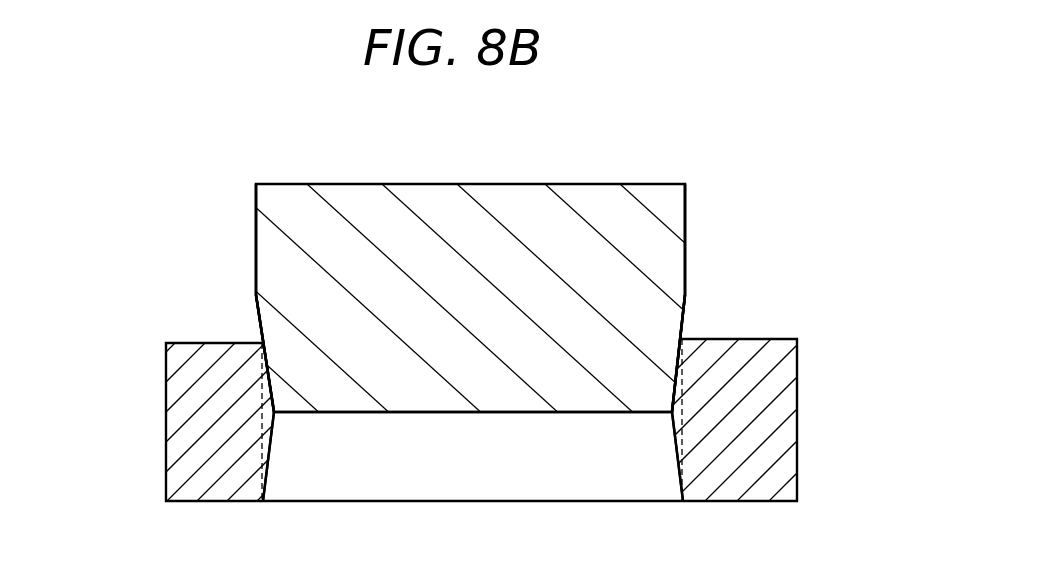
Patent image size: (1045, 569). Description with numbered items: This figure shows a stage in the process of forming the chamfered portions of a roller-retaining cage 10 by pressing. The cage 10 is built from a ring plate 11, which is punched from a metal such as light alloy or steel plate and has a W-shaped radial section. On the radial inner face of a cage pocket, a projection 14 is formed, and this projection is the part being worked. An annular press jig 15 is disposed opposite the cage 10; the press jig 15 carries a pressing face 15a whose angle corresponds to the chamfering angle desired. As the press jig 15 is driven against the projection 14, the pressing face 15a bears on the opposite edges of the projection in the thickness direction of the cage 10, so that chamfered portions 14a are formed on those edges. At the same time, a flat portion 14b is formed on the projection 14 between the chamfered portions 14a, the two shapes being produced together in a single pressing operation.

The cage 10 is at (772, 217).
The ring plate 11 is at (758, 342).
The projection 14 is at (267, 427).
The chamfered portions 14a is at (270, 372).
The flat portion 14b is at (277, 414).
The press jig 15 is at (578, 200).
The pressing face 15a is at (268, 400).